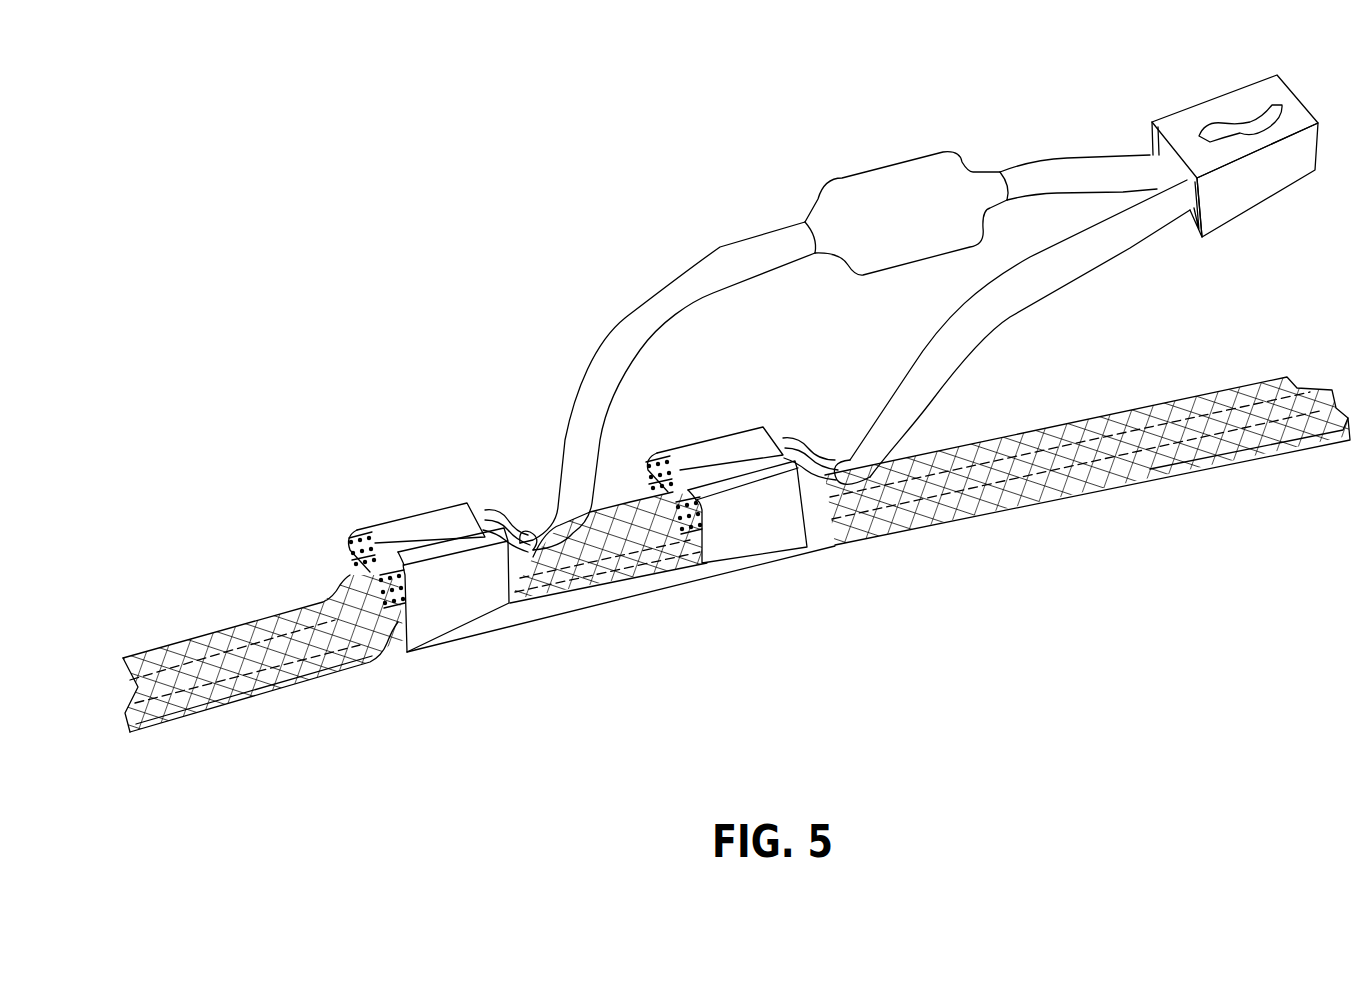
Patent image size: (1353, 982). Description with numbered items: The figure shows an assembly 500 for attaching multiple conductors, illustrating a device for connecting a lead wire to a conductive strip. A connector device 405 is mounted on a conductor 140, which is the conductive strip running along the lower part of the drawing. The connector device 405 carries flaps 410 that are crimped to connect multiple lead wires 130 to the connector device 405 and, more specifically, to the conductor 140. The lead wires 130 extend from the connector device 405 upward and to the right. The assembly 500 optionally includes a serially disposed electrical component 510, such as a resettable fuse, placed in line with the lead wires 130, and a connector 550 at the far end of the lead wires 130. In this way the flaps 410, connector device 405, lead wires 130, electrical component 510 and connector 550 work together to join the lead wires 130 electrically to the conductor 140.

The assembly 500 is at (417, 198).
The lead wires 130 is at (1052, 167).
The electrical component 510 is at (870, 185).
The connector 550 is at (1270, 193).
The flaps 410 is at (433, 602).
The connector device 405 is at (636, 660).
The conductor 140 is at (257, 690).